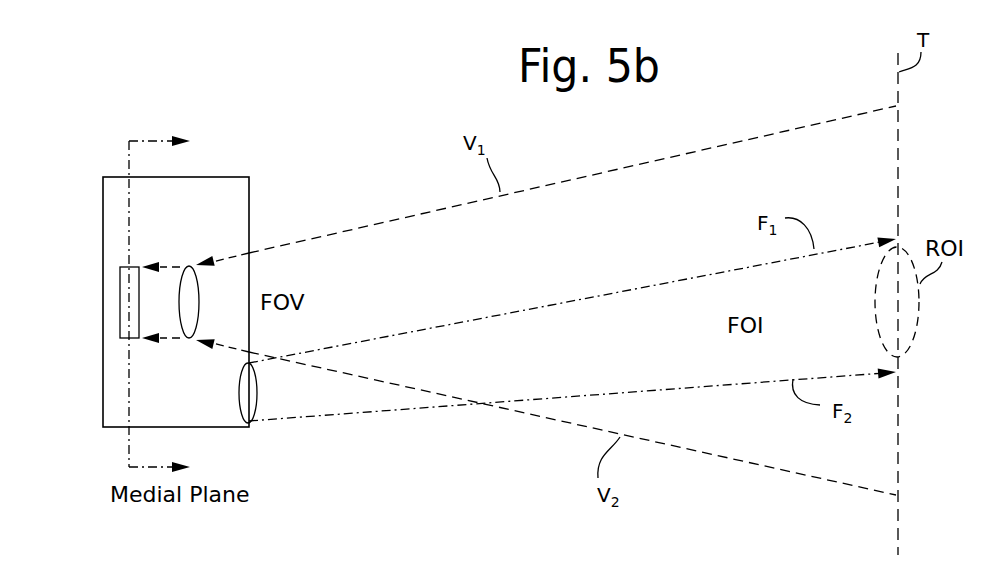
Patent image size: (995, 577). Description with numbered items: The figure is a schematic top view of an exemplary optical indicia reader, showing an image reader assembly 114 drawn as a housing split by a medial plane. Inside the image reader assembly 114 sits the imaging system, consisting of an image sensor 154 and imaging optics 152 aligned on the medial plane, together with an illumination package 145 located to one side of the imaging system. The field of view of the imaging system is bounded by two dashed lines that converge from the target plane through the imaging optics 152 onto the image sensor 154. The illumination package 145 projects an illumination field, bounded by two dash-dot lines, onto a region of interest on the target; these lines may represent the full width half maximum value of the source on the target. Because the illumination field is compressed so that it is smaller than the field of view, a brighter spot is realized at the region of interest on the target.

The image reader assembly 114 is at (224, 134).
The imaging optics 152 is at (189, 266).
The image sensor 154 is at (120, 284).
The illumination package 145 is at (258, 400).